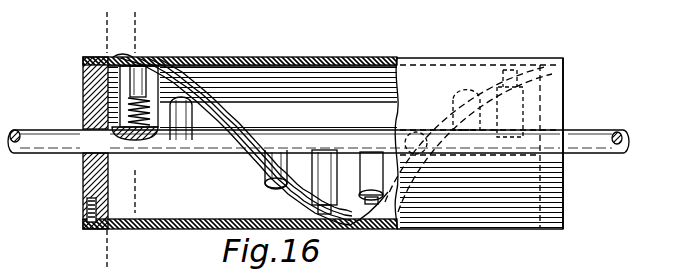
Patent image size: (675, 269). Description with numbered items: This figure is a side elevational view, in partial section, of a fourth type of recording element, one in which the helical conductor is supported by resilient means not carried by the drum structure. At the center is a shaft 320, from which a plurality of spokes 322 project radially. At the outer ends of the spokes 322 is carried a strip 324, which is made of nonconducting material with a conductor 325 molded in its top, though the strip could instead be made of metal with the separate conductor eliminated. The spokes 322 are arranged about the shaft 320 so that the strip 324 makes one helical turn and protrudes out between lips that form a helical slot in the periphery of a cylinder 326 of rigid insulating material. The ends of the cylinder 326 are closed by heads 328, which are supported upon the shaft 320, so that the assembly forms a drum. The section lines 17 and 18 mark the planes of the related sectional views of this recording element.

The section line 17- 17 is at (118, 33).
The section line 18- 18 is at (128, 33).
The shaft 320 is at (597, 138).
The spokes 322 is at (318, 148).
The strip 324 is at (225, 122).
The conductor 325 is at (173, 58).
The cylinder 326 is at (277, 57).
The heads 328 is at (88, 80).